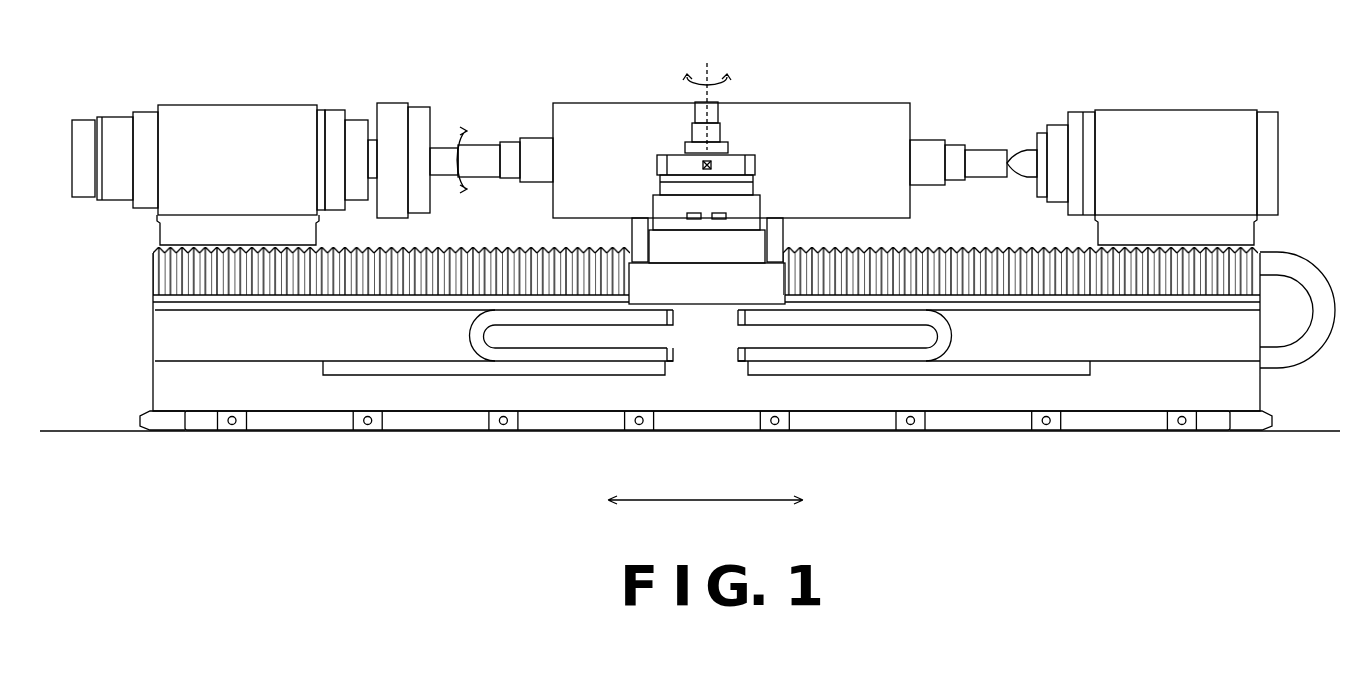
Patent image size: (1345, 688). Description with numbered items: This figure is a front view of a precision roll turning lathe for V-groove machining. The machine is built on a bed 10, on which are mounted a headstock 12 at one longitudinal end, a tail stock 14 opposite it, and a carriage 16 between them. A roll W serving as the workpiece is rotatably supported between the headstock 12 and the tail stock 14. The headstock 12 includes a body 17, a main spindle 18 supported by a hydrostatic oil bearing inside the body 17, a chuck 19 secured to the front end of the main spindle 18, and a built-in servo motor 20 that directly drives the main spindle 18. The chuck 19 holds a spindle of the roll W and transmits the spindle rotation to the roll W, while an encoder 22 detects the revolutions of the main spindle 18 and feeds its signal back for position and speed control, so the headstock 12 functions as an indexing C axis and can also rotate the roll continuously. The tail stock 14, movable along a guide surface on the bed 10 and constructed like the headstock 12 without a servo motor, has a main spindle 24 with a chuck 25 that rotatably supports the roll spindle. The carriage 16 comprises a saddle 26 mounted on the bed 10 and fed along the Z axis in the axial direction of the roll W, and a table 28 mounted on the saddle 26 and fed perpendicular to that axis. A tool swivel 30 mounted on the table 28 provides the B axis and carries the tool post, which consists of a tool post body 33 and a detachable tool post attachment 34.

The bed 10 is at (177, 333).
The headstock 12 is at (239, 150).
The tail stock 14 is at (1180, 99).
The carriage 16 is at (734, 161).
The body 17 is at (187, 138).
The main spindle 18 is at (357, 132).
The chuck 19 is at (395, 117).
The servo motor 20 is at (120, 185).
The encoder 22 is at (84, 138).
The main spindle 24 is at (1056, 133).
The chuck 25 is at (1017, 152).
The saddle 26 is at (713, 288).
The table 28 is at (742, 212).
The tool swivel 30 is at (670, 187).
The tool post body 33 is at (678, 158).
The tool post attachment 34 is at (737, 129).
The roll W is at (815, 122).
The B axis B is at (699, 78).
The C axis C is at (458, 147).
The Z axis Z is at (705, 487).